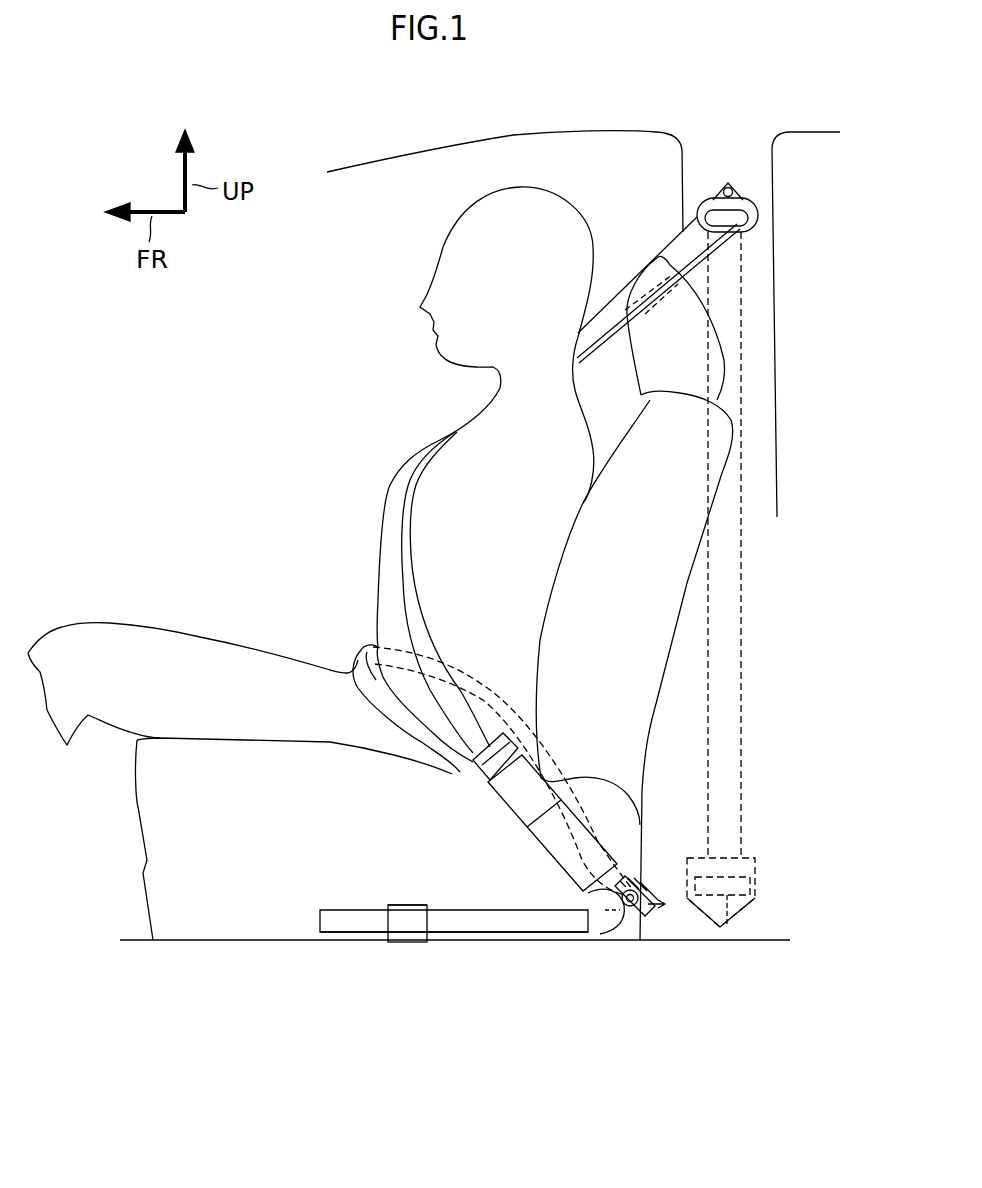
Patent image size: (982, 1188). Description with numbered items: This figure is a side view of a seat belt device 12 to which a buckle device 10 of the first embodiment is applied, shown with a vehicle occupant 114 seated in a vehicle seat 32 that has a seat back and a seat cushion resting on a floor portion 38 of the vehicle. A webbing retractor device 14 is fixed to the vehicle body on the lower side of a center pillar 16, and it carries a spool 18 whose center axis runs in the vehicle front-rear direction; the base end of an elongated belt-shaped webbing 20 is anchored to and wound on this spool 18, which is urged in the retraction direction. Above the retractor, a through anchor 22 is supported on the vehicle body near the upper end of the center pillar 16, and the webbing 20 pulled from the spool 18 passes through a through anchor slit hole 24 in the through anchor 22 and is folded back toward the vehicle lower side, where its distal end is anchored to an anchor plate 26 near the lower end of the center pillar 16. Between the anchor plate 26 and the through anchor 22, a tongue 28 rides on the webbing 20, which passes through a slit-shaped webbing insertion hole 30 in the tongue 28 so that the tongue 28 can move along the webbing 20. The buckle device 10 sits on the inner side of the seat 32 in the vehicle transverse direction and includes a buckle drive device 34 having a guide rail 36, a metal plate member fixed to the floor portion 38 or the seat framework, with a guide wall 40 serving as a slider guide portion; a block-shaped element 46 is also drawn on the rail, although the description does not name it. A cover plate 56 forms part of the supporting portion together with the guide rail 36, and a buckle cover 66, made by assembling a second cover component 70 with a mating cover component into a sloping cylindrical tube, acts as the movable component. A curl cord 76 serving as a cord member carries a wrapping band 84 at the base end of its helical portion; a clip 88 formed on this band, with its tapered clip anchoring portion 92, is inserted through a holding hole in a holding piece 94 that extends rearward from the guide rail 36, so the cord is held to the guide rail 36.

The buckle device 10 is at (537, 829).
The seat belt device 12 is at (465, 665).
The webbing retractor device 14 is at (757, 880).
The center pillar 16 is at (766, 346).
The spool 18 is at (720, 928).
The webbing 20 is at (396, 478).
The through anchor 22 is at (748, 203).
The through anchor slit hole 24 is at (700, 207).
The anchor plate 26 is at (645, 850).
The tongue 28 is at (470, 780).
The webbing insertion hole 30 is at (497, 712).
The vehicle seat 32 is at (683, 634).
The buckle drive device 34 is at (426, 893).
The guide rail 36 is at (487, 907).
The floor portion 38 is at (203, 938).
The guide wall 40 is at (460, 927).
The slider block 46 is at (383, 907).
The cover plate 56 is at (604, 912).
The buckle cover 66 is at (570, 803).
The second cover component 70 is at (557, 840).
The curl cord 76 is at (655, 902).
The wrapping band 84 is at (622, 907).
The clip 88 is at (630, 898).
The clip anchoring portion 92 is at (655, 958).
The holding piece 94 is at (632, 895).
The vehicle occupant 114 is at (443, 465).